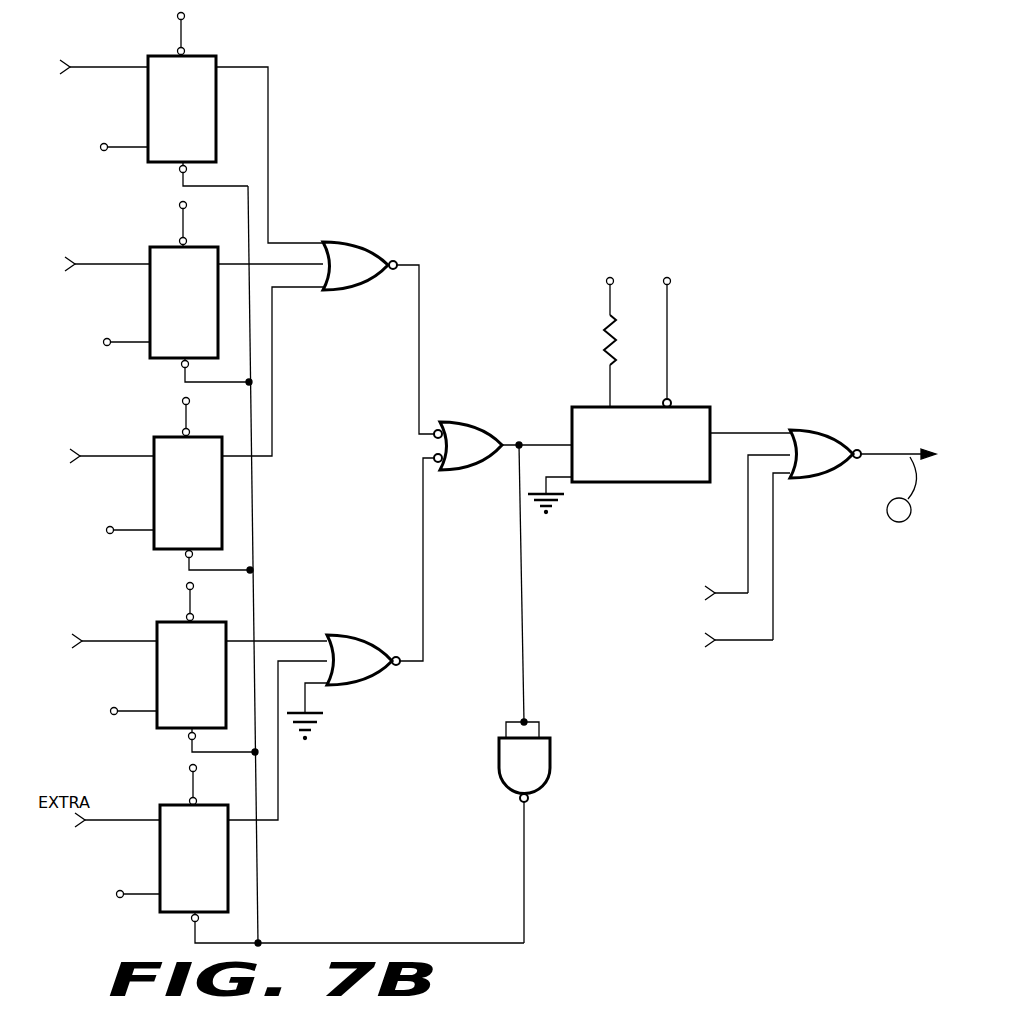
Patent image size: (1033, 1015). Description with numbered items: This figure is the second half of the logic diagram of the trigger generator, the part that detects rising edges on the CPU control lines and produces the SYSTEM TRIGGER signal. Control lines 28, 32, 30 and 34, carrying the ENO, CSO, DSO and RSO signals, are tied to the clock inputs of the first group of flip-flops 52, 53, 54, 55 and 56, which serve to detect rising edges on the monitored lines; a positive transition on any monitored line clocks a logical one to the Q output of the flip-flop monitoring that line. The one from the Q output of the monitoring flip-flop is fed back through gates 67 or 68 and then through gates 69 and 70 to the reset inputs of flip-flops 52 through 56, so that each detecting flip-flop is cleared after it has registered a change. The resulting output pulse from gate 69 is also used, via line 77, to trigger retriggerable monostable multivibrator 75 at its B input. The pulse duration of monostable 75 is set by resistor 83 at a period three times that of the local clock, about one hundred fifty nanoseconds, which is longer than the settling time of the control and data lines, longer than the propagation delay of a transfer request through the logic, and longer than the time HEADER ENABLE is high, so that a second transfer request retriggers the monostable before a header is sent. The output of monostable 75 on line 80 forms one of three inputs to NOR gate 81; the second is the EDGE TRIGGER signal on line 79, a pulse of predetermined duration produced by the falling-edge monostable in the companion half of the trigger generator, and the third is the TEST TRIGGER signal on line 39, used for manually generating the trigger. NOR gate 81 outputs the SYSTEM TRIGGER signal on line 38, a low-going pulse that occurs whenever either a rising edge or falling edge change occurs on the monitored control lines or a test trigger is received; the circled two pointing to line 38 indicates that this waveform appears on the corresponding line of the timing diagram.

The control line 28 is at (85, 67).
The control line 32 is at (89, 264).
The control line 30 is at (93, 456).
The control line 34 is at (96, 641).
The flip-flop 52 is at (92, 67).
The flip-flop 53 is at (105, 264).
The flip-flop 54 is at (114, 456).
The flip-flop 55 is at (118, 641).
The flip-flop 56 is at (160, 849).
The gate 67 is at (368, 232).
The gate 68 is at (382, 625).
The gate 69 is at (478, 412).
The gate 70 is at (499, 766).
The retriggerable monostable multivibrator 75 is at (658, 482).
The line 77 is at (543, 443).
The resistor 83 is at (603, 338).
The line 80 is at (775, 421).
The NOR gate 81 is at (818, 479).
The line 38 is at (896, 468).
The line 79 is at (733, 593).
The line 39 is at (750, 645).